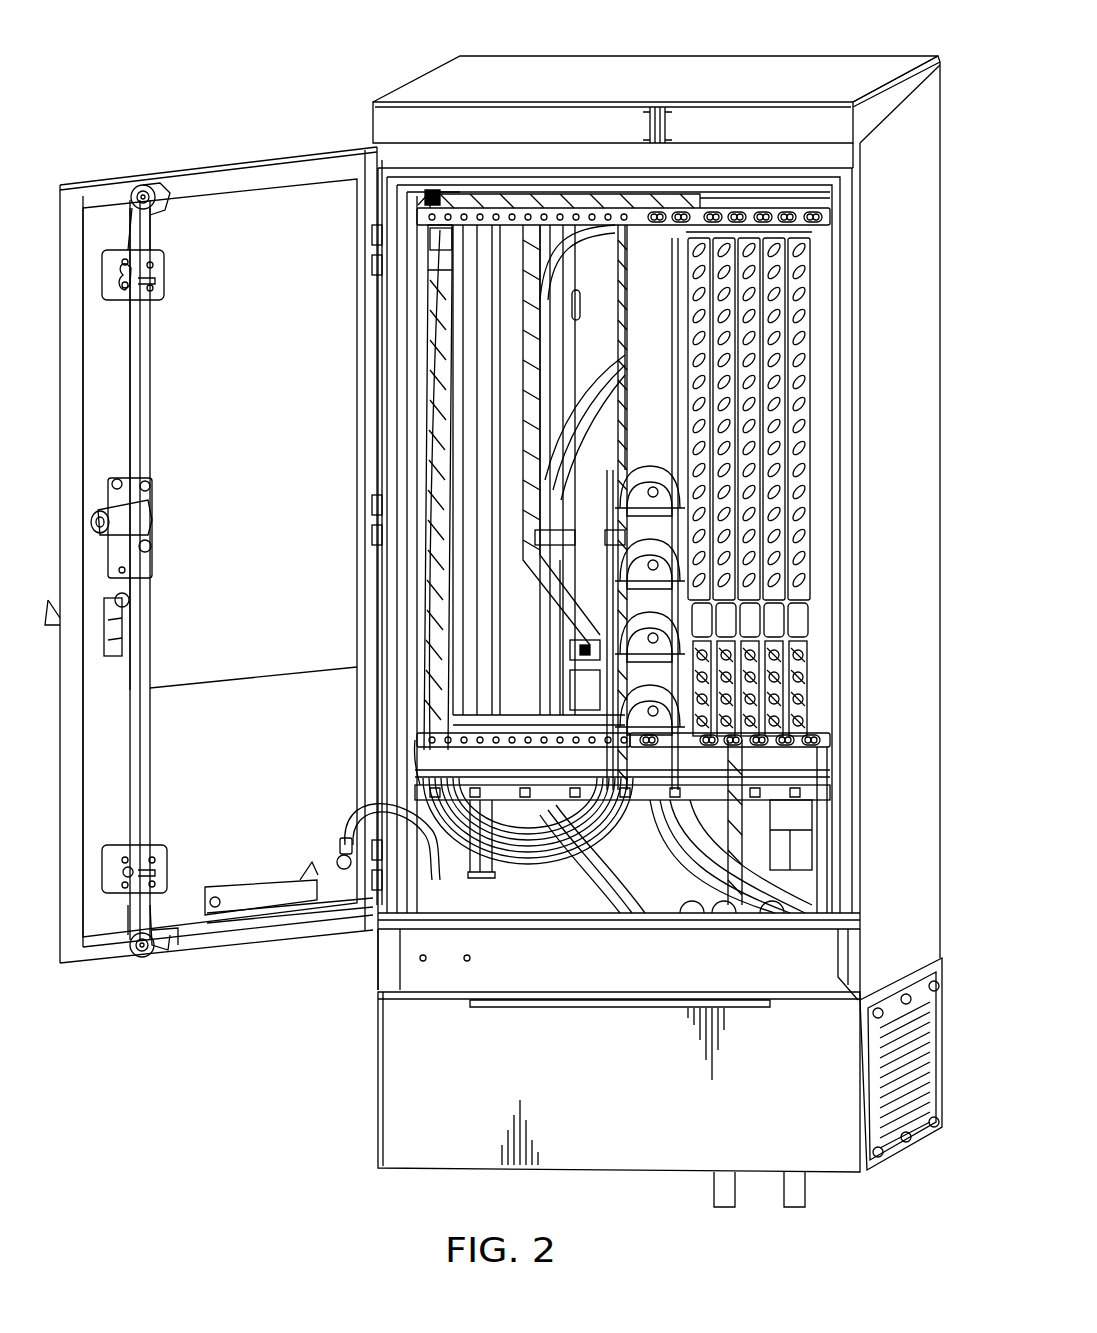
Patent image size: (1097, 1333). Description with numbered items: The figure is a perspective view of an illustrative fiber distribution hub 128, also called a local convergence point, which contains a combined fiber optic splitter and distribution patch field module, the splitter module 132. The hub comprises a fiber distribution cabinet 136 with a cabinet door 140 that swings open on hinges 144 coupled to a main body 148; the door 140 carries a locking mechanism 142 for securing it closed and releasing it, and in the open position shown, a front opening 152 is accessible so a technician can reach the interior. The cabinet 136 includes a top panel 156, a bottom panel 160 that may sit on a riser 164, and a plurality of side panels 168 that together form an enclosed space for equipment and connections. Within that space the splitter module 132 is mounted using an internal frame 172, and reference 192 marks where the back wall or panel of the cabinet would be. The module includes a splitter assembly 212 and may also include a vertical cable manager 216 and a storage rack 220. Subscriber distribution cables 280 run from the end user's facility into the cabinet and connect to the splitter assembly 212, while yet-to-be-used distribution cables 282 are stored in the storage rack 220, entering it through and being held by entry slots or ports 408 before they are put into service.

The fiber distribution hub 128 is at (370, 58).
The fiber optic splitter module 132 is at (430, 190).
The fiber distribution cabinet 136 is at (838, 65).
The cabinet door 140 is at (113, 186).
The locking mechanism 142 is at (150, 760).
The hinges 144 is at (373, 203).
The main body 148 is at (380, 965).
The front opening 152 is at (342, 561).
The top panel 156 is at (662, 68).
The bottom panel 160 is at (922, 968).
The riser 164 is at (832, 1157).
The side panels 168 is at (942, 80).
The internal frame 172 is at (737, 205).
The back wall location 192 is at (592, 359).
The splitter assembly 212 is at (427, 285).
The vertical cable manager 216 is at (660, 523).
The storage rack 220 is at (803, 352).
The subscriber distribution cable 280 is at (520, 878).
The yet-to-be-used distribution cable 282 is at (830, 760).
The entry slots or ports 408 is at (828, 658).